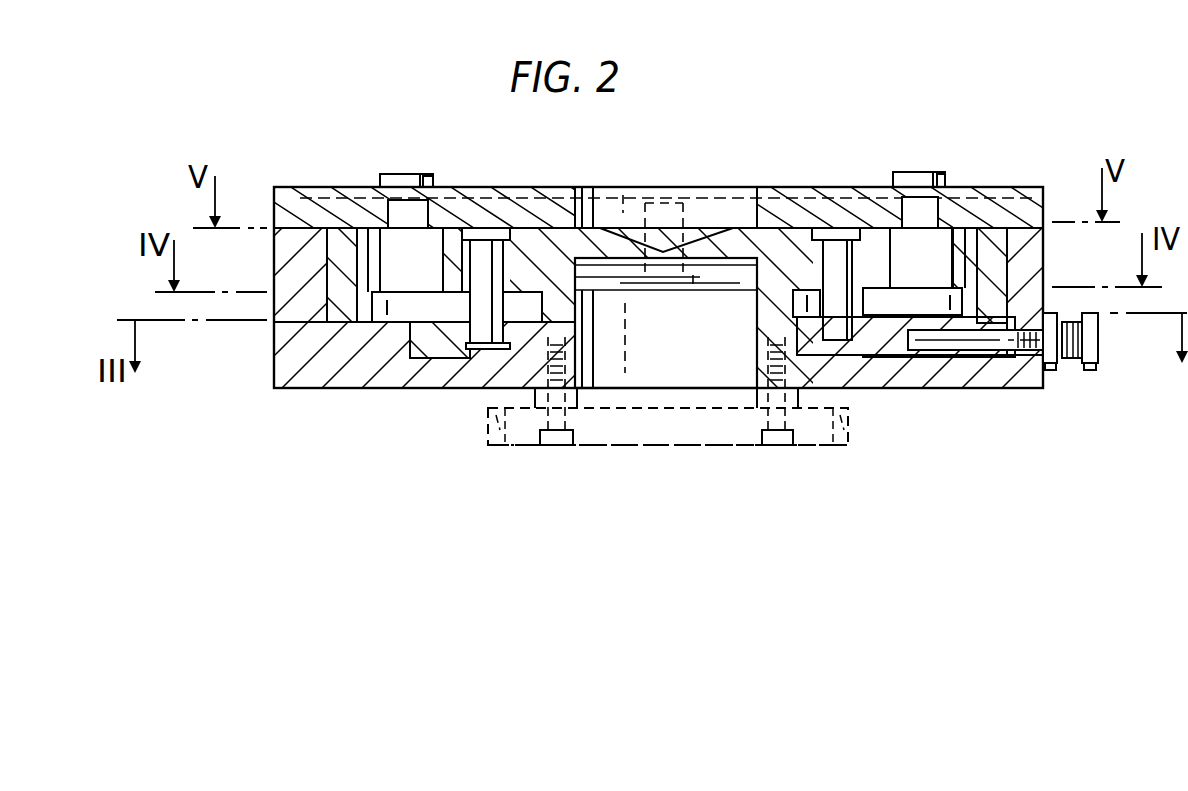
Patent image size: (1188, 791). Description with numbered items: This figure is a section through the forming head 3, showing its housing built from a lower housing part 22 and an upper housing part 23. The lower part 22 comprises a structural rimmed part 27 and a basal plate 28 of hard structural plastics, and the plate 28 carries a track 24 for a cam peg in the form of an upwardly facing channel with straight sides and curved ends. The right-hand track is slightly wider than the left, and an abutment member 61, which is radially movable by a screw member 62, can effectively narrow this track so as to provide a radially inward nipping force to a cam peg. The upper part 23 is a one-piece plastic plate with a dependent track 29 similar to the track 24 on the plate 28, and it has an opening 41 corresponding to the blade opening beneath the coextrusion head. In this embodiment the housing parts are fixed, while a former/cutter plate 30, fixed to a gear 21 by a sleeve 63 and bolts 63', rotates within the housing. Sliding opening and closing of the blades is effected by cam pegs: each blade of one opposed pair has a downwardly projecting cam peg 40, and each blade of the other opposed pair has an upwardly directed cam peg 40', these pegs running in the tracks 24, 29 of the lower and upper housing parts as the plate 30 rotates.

The workpiece holding device 3 is at (523, 178).
The gear 21 is at (850, 418).
The lower housing part 22 is at (340, 368).
The upper housing part 23 is at (822, 208).
The track 24 is at (422, 348).
The structural rimmed part 27 is at (1022, 280).
The basal plate 28 is at (412, 352).
The dependent track 29 is at (940, 210).
The former/cutter plate 30 is at (985, 258).
The cam peg 40 is at (477, 353).
The cam peg 40' is at (658, 211).
The opening 41 is at (757, 212).
The abutment member 61 is at (885, 340).
The screw member 62 is at (1070, 345).
The sleeve 63 is at (666, 418).
The bolts 63' is at (666, 422).